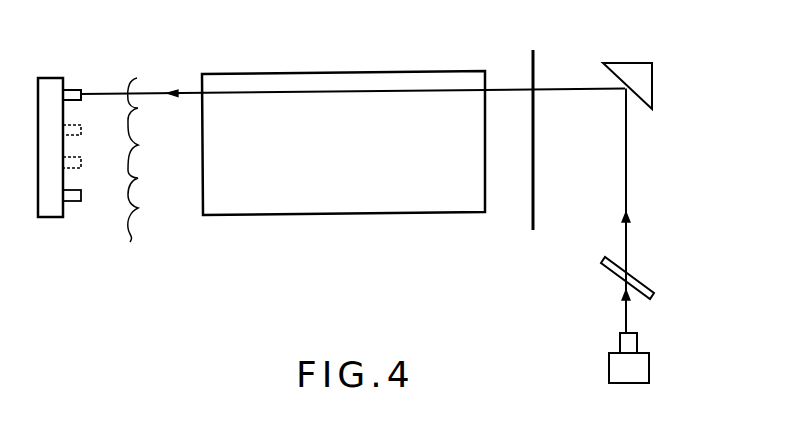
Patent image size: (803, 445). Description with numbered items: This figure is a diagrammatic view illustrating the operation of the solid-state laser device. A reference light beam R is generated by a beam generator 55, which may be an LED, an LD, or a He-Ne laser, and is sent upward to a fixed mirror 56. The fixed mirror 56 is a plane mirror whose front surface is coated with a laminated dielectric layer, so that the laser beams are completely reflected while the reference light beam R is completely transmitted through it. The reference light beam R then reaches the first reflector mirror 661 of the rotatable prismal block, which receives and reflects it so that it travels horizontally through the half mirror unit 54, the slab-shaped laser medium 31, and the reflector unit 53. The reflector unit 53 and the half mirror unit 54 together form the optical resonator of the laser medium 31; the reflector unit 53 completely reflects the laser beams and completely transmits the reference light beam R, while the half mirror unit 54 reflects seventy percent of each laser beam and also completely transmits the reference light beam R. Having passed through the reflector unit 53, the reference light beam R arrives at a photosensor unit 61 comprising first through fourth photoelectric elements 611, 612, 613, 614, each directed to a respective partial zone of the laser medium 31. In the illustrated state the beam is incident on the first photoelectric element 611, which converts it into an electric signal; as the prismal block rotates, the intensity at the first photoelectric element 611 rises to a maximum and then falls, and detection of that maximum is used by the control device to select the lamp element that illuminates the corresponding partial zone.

The photosensor unit 61 is at (49, 78).
The first photoelectric element 611 is at (66, 90).
The second photoelectric element 612 is at (66, 125).
The third photoelectric element 613 is at (66, 160).
The fourth photoelectric element 614 is at (66, 193).
The reflector unit 53 is at (128, 175).
The slab-shaped laser medium 31 is at (345, 207).
The half mirror unit 54 is at (532, 213).
The first reflector mirror 661 is at (631, 68).
The fixed mirror 56 is at (594, 278).
The beam generator 55 is at (610, 372).
The reference light beam R is at (628, 317).